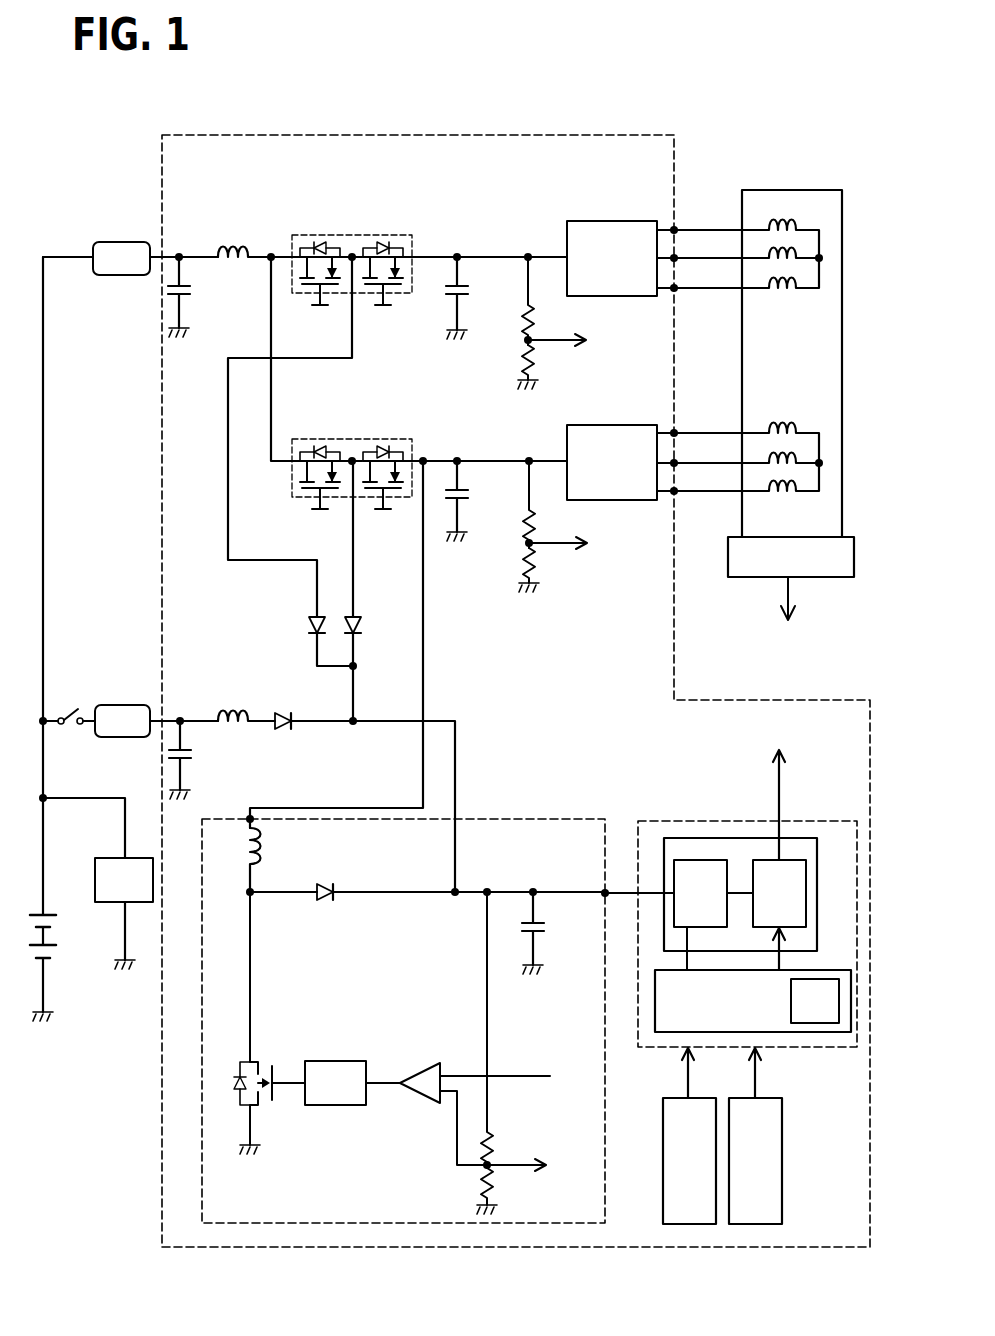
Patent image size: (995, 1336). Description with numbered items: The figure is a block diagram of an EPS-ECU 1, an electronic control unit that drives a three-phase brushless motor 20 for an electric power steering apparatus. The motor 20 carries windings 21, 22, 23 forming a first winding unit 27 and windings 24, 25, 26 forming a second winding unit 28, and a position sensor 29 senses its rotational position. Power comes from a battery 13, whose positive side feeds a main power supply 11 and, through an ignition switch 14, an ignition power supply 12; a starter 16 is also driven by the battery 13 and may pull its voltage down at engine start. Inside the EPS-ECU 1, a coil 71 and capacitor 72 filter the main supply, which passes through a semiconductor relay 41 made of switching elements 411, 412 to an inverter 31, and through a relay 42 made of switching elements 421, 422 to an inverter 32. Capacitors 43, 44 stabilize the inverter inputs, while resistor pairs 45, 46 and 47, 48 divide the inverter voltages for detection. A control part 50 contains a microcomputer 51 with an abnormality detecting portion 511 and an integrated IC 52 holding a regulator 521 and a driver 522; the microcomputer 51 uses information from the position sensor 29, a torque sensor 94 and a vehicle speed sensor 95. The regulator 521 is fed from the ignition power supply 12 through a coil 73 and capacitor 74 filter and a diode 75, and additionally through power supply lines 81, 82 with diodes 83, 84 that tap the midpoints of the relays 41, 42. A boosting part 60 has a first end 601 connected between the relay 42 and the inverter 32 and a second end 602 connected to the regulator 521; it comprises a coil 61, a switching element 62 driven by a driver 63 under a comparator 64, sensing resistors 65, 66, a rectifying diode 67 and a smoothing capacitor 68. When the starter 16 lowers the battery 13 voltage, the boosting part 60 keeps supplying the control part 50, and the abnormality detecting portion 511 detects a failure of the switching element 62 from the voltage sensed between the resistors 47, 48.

The EPS-ECU 1 is at (403, 135).
The main power supply 11 is at (120, 242).
The ignition power supply 12 is at (120, 705).
The battery 13 is at (50, 920).
The ignition switch 14 is at (65, 712).
The starter 16 is at (145, 858).
The motor 20 is at (781, 190).
The winding 21 is at (800, 232).
The winding 22 is at (800, 260).
The winding 23 is at (800, 290).
The winding 24 is at (800, 435).
The winding 25 is at (800, 465).
The winding 26 is at (800, 493).
The winding unit 27 is at (801, 312).
The winding unit 28 is at (771, 424).
The position sensor 29 is at (828, 577).
The inverter 31 is at (608, 221).
The inverter 32 is at (608, 425).
The relay 41 is at (354, 240).
The switching element 411 is at (303, 236).
The switching element 412 is at (395, 236).
The relay 42 is at (354, 444).
The switching element 421 is at (303, 440).
The switching element 422 is at (395, 440).
The capacitor 43 is at (470, 290).
The capacitor 44 is at (470, 494).
The resistor 45 is at (536, 316).
The resistor 46 is at (536, 368).
The resistor 47 is at (537, 518).
The resistor 48 is at (537, 571).
The control part 50 is at (649, 820).
The microcomputer 51 is at (755, 1001).
The abnormality detecting portion 511 is at (815, 1023).
The integrated IC 52 is at (746, 860).
The regulator 521 is at (690, 860).
The driver 522 is at (798, 860).
The boosting part 60 is at (528, 818).
The first end 601 is at (252, 819).
The second end 602 is at (606, 884).
The coil 61 is at (262, 850).
The switching element 62 is at (236, 1078).
The driver 63 is at (333, 1061).
The comparator 64 is at (423, 1063).
The resistor 65 is at (495, 1142).
The resistor 66 is at (495, 1192).
The diode 67 is at (325, 905).
The capacitor 68 is at (546, 928).
The coil 71 is at (230, 244).
The capacitor 72 is at (192, 290).
The coil 73 is at (230, 707).
The capacitor 74 is at (193, 754).
The diode 75 is at (283, 707).
The power supply line 81 is at (317, 586).
The power supply line 82 is at (355, 586).
The diode 83 is at (309, 626).
The diode 84 is at (362, 626).
The torque sensor 94 is at (663, 1160).
The vehicle speed sensor 95 is at (782, 1160).